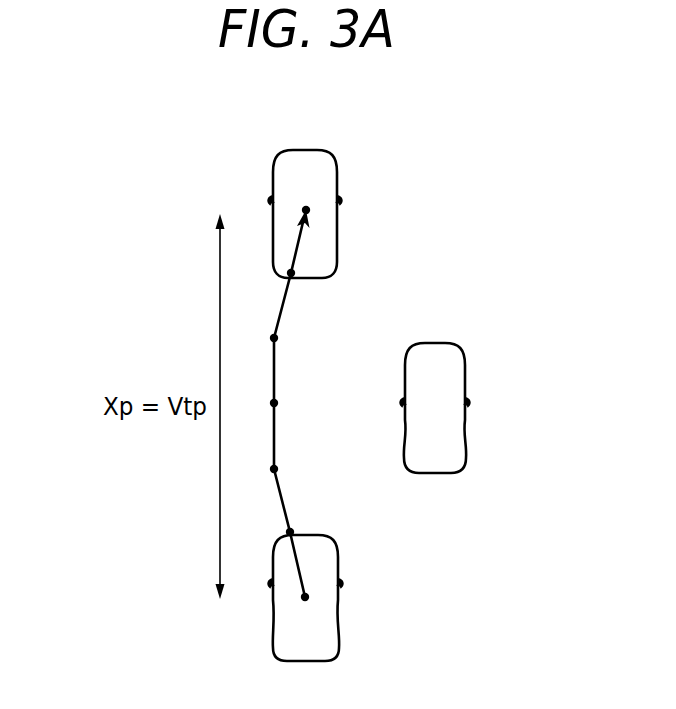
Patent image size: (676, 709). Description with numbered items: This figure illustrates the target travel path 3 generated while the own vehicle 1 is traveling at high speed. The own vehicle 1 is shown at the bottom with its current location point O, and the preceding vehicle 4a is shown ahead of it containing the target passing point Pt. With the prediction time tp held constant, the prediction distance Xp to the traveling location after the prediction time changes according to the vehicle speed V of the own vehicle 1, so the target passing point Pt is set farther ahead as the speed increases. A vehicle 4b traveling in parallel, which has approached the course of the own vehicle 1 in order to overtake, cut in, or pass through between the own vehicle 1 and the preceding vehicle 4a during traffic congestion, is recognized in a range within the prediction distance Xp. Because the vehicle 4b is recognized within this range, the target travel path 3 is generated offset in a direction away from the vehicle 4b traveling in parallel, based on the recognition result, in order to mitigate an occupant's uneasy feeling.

The own vehicle 1 is at (338, 553).
The target travel path 3 is at (285, 307).
The preceding vehicle 4a is at (318, 150).
The vehicle traveling in parallel 4b is at (461, 352).